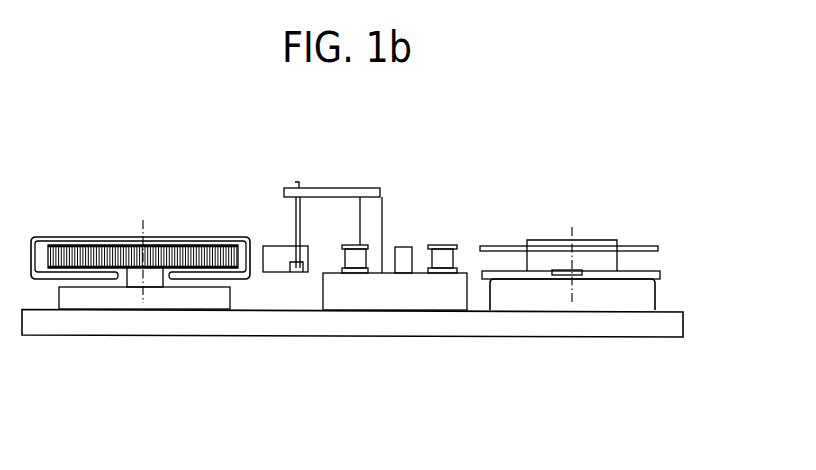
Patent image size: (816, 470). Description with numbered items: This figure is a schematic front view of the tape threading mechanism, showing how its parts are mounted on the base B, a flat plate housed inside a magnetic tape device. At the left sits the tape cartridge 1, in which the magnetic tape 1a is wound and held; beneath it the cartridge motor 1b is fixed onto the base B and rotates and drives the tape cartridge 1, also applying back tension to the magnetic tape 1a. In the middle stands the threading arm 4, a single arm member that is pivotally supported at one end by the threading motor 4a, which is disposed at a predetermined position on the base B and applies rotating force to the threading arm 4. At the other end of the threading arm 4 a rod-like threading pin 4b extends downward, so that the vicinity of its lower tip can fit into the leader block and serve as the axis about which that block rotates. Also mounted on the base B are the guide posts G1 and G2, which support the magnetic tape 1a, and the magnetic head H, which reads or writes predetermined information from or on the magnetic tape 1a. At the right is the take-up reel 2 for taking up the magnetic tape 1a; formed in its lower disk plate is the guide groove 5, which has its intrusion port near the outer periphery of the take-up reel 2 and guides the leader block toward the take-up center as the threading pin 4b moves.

The tape cartridge 1 is at (88, 238).
The magnetic tape 1a is at (202, 258).
The cartridge motor 1b is at (160, 303).
The take-up reel 2 is at (650, 247).
The threading arm 4 is at (338, 188).
The threading motor 4a is at (387, 210).
The threading pin 4b is at (290, 225).
The guide groove 5 is at (560, 272).
The magnetic head H is at (402, 247).
The guide post G1 is at (357, 262).
The guide post G2 is at (442, 263).
The base B is at (522, 338).